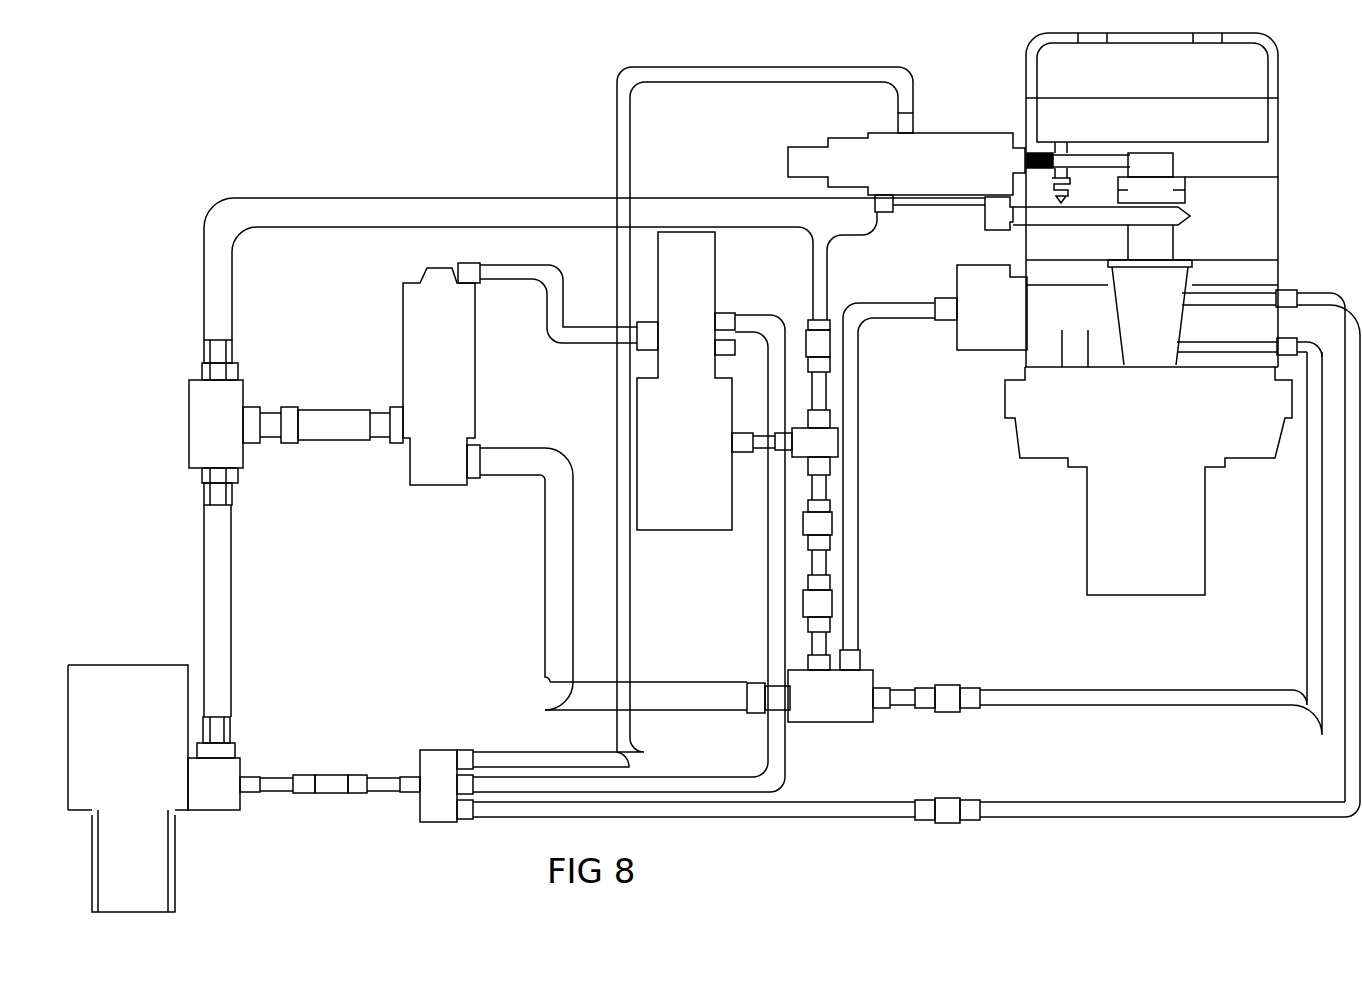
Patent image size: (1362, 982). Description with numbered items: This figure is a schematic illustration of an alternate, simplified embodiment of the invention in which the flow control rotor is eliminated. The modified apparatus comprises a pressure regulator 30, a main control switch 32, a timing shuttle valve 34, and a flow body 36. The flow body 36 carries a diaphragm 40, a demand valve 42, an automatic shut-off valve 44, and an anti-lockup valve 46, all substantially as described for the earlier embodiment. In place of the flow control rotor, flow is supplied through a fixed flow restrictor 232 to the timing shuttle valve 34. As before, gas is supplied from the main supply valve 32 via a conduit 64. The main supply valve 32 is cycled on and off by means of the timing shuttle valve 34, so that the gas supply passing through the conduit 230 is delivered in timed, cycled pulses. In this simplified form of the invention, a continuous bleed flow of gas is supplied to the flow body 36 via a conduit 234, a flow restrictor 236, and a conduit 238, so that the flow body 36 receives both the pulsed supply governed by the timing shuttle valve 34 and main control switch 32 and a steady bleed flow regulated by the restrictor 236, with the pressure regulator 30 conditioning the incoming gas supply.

The pressure regulator 30 is at (126, 715).
The main control switch 32 is at (440, 463).
The timing shuttle valve 34 is at (688, 505).
The flow body 36 is at (1253, 228).
The diaphragm 40 is at (1137, 455).
The demand valve 42 is at (1178, 88).
The automatic shut-off valve 44 is at (940, 150).
The anti-lockup valve 46 is at (975, 345).
The conduit 64 is at (565, 593).
The conduit 230 is at (1090, 695).
The fixed flow restrictor 232 is at (948, 690).
The conduit 234 is at (805, 810).
The flow restrictor 236 is at (947, 803).
The conduit 238 is at (1157, 808).